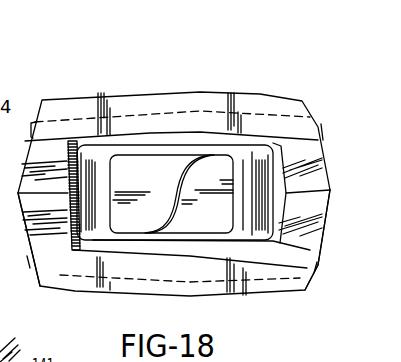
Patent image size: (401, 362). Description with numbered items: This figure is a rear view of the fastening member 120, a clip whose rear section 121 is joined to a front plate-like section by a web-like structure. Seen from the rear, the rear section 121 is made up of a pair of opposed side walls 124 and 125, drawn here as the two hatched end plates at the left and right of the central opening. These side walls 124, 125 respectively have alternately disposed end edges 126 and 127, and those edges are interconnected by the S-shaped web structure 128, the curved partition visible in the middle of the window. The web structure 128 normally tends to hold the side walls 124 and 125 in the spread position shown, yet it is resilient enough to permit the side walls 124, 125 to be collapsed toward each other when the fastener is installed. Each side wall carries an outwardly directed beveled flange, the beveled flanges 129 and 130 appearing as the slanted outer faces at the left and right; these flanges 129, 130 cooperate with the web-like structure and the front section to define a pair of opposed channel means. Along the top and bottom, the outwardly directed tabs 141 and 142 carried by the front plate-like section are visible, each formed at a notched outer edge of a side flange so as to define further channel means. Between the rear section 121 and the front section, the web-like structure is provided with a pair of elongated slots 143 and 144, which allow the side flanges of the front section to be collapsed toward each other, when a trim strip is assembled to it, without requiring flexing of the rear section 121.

The fastening member 120 is at (193, 33).
The rear section 121 is at (249, 131).
The side wall 124 is at (84, 238).
The side wall 125 is at (243, 228).
The end edge 126 is at (94, 150).
The end edge 127 is at (253, 147).
The S-shaped web structure 128 is at (185, 157).
The beveled flange 129 is at (72, 240).
The beveled flange 130 is at (272, 238).
The tab 141 is at (125, 100).
The tab 142 is at (210, 290).
The elongated slot 143 is at (158, 150).
The elongated slot 144 is at (187, 243).